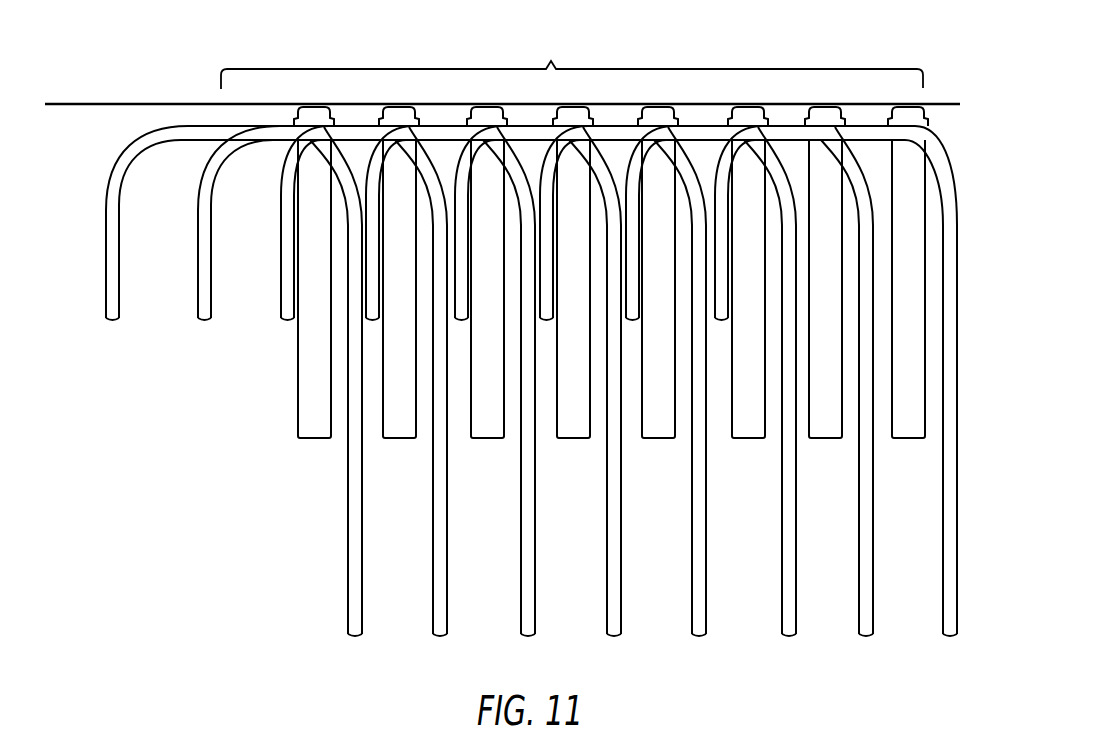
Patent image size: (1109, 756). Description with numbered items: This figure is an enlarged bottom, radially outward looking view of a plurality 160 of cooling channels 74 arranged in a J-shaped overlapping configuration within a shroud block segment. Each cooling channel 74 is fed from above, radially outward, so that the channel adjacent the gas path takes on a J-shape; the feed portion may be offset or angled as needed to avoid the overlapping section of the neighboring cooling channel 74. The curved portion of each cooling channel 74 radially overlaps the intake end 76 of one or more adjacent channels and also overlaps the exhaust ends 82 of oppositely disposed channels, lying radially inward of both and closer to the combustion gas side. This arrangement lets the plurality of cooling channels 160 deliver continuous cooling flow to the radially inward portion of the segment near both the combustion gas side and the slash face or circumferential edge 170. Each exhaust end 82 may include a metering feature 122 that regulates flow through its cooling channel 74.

The slash face or circumferential edge 170 is at (113, 103).
The plurality of cooling channels 160 is at (551, 61).
The metering feature 122 is at (924, 125).
The exhaust end 82 is at (572, 438).
The cooling channel 74 is at (355, 636).
The intake end 76 is at (110, 320).